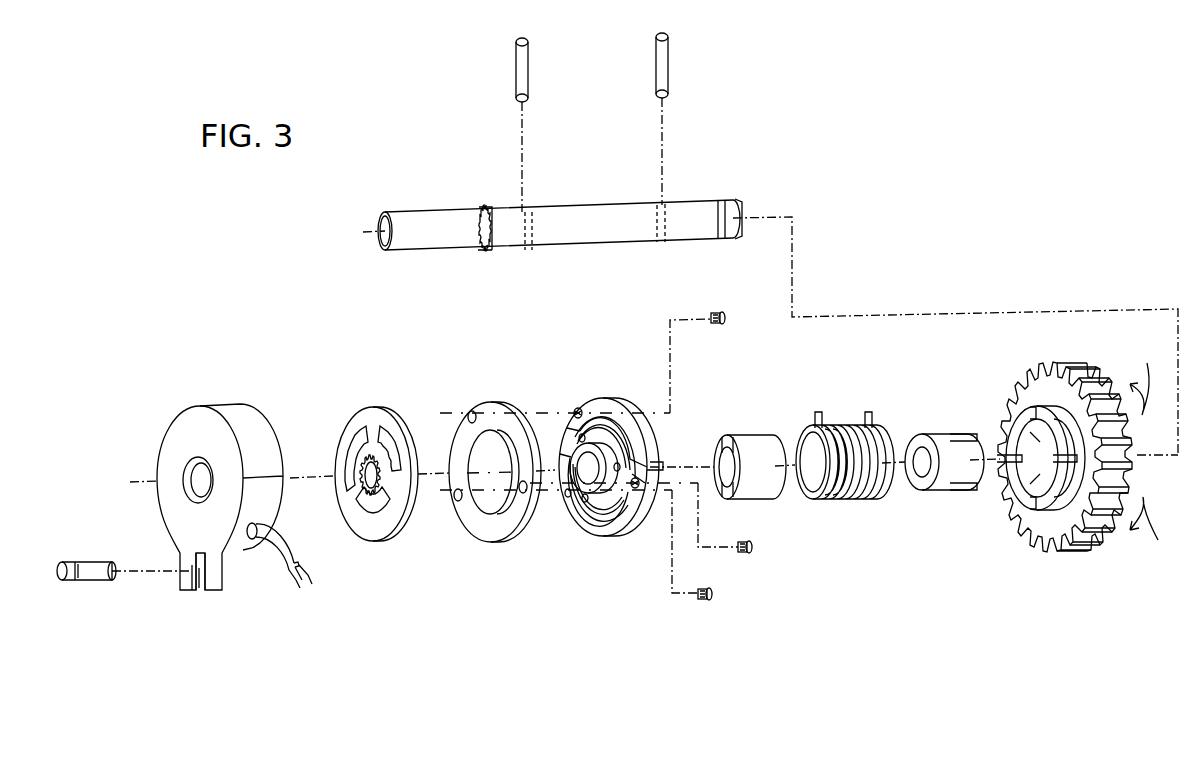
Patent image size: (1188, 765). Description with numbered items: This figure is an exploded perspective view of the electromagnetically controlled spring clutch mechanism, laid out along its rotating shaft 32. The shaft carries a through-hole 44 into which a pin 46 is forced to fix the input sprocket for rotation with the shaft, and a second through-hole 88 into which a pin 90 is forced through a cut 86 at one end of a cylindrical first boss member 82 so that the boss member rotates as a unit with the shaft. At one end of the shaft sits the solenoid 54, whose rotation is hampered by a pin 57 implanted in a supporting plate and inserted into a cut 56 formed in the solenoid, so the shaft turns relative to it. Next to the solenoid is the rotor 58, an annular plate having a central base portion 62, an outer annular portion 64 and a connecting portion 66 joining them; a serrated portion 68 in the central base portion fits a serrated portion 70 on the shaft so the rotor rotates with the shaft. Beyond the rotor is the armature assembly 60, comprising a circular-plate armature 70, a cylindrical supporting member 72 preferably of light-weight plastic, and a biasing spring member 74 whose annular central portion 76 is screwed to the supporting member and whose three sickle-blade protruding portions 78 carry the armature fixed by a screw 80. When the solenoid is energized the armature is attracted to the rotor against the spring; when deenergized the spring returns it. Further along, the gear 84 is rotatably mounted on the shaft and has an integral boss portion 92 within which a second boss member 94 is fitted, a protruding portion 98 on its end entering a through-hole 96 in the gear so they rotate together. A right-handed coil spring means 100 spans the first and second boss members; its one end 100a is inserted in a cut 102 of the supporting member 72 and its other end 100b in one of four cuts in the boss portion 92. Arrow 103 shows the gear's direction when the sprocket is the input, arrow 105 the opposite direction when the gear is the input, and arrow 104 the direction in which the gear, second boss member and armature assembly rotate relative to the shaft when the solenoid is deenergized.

The rotating shaft 32 is at (610, 245).
The through-hole 44 is at (668, 247).
The pin 46 is at (669, 60).
The solenoid 54 is at (215, 499).
The cut 56 is at (192, 578).
The pin 57 is at (103, 576).
The rotor 58 is at (366, 456).
The armature assembly 60 is at (644, 452).
The central base portion 62 is at (370, 500).
The annular portion 64 is at (396, 435).
The connecting portion 66 is at (346, 468).
The serrated portion 68 is at (362, 490).
The serrated portion / armature 70 is at (485, 204).
The supporting member 72 is at (650, 447).
The biasing spring member 74 is at (613, 385).
The annular central portion 76 is at (590, 520).
The protruding portions 78 is at (615, 525).
The screw 80 is at (714, 594).
The first boss member 82 is at (750, 458).
The gear 84 is at (1041, 478).
The cut 86 is at (731, 492).
The through-hole 88 is at (530, 254).
The pin 90 is at (529, 62).
The boss portion 92 is at (1042, 408).
The second boss member 94 is at (944, 464).
The through-hole 96 is at (1020, 505).
The protruding portion 98 is at (960, 434).
The coil spring means 100 is at (839, 453).
The one end of coil spring means 100a is at (815, 412).
The other end of coil spring means 100b is at (868, 412).
The cut 102 is at (658, 466).
The arrow 103 is at (1140, 378).
The arrow 104 is at (1010, 456).
The arrow 105 is at (1159, 527).